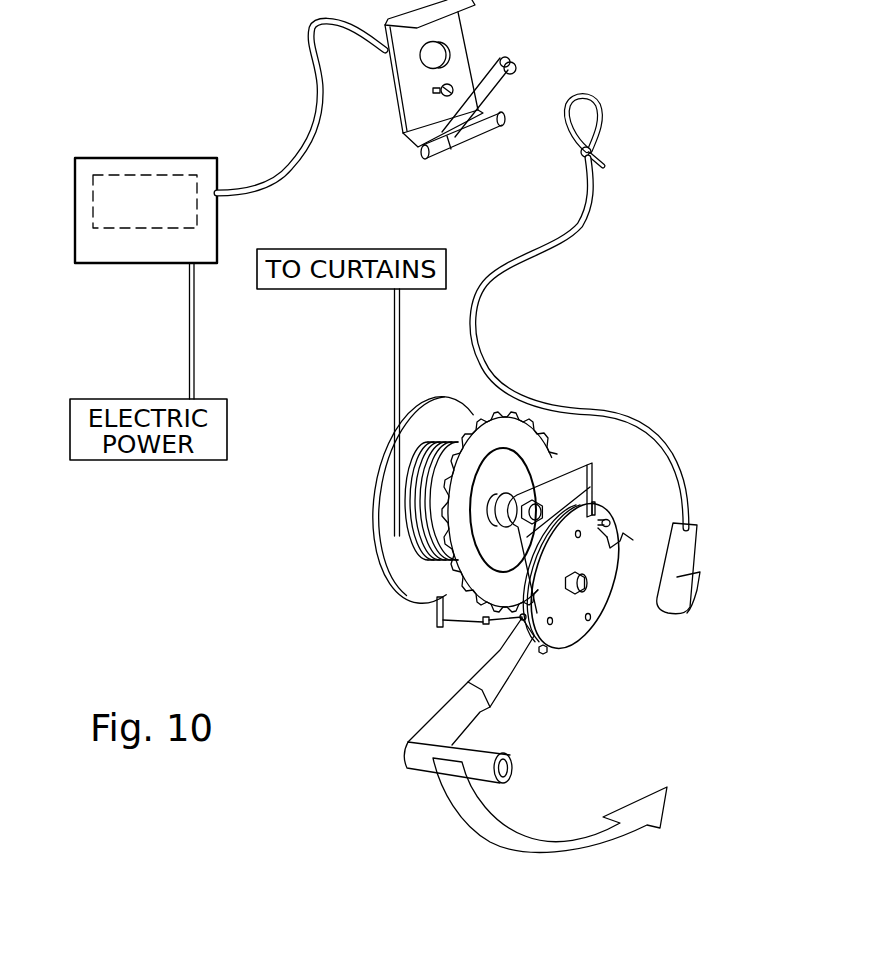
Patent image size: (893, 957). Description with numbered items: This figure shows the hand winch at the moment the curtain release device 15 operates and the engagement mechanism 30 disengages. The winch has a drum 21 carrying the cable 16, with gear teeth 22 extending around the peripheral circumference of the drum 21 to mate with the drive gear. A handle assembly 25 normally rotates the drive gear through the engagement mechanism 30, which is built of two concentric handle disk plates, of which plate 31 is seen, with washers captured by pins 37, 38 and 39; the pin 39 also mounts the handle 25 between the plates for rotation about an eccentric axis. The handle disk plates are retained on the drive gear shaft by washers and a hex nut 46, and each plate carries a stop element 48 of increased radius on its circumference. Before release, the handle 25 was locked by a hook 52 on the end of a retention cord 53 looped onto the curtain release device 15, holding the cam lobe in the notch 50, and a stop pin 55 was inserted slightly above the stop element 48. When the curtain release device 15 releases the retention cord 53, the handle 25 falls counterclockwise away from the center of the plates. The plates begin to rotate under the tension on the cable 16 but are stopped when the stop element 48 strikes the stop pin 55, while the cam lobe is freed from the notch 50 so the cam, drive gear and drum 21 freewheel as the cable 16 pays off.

The electronic curtain release device 15 is at (540, 86).
The cable 16 is at (394, 380).
The drum 21 is at (382, 537).
The gear teeth 22 is at (498, 413).
The handle assembly 25 is at (460, 727).
The engagement mechanism 30 is at (612, 652).
The handle disk plate 31 is at (578, 622).
The pin 37 is at (586, 528).
The pin 38 is at (597, 618).
The pin 39 is at (550, 627).
The hex nut 46 is at (563, 587).
The stop element 48 is at (623, 537).
The notch 50 is at (522, 620).
The hook 52 is at (688, 590).
The retention cord 53 is at (591, 402).
The stop pin 55 is at (606, 521).